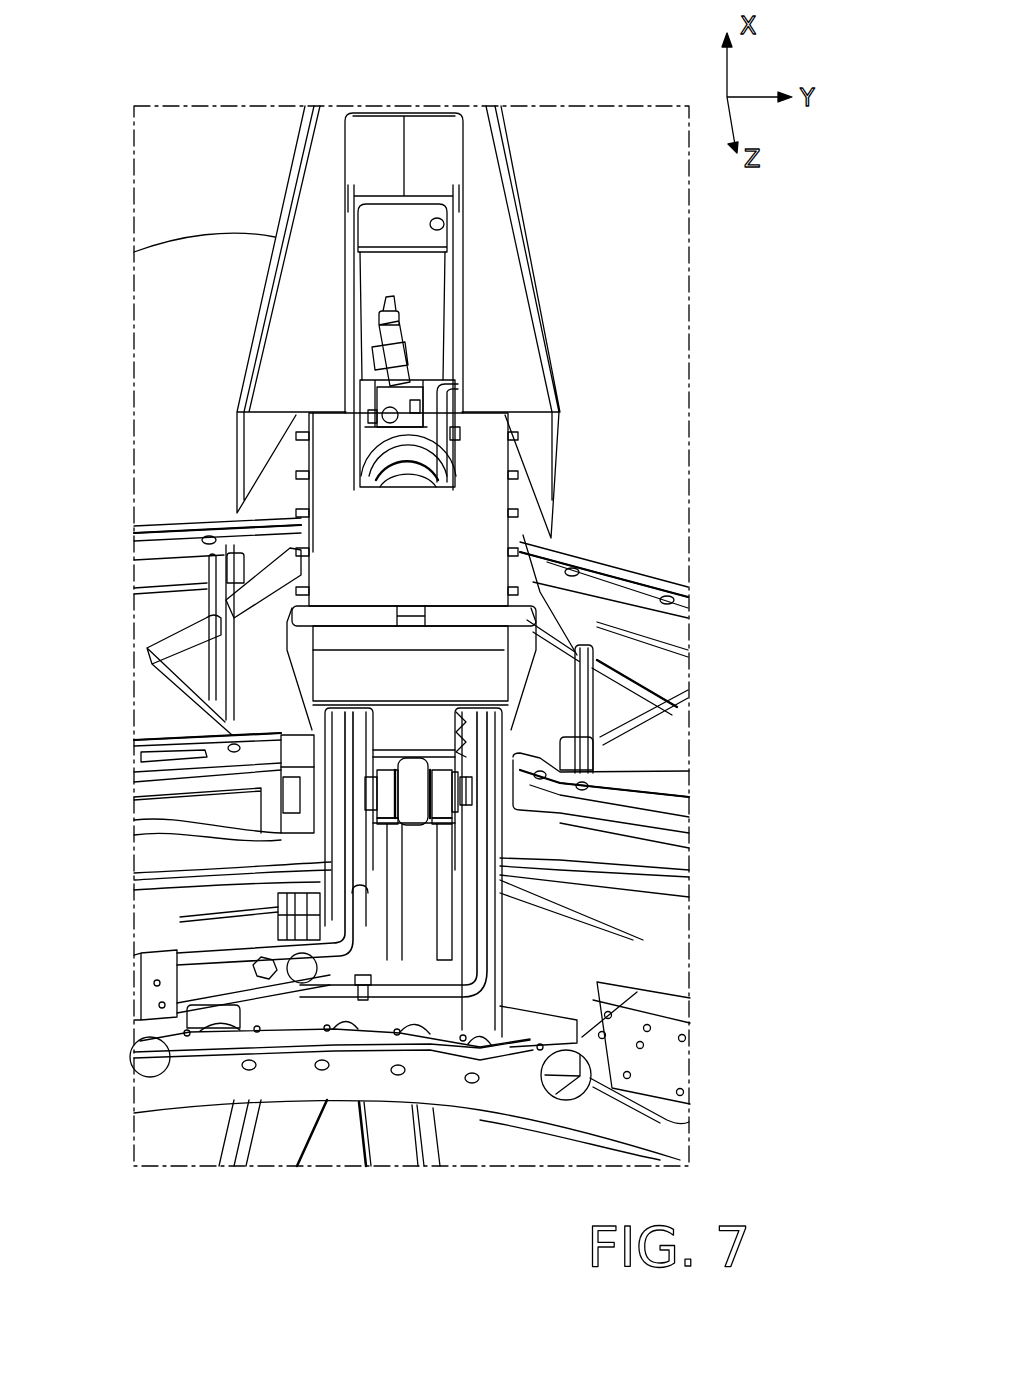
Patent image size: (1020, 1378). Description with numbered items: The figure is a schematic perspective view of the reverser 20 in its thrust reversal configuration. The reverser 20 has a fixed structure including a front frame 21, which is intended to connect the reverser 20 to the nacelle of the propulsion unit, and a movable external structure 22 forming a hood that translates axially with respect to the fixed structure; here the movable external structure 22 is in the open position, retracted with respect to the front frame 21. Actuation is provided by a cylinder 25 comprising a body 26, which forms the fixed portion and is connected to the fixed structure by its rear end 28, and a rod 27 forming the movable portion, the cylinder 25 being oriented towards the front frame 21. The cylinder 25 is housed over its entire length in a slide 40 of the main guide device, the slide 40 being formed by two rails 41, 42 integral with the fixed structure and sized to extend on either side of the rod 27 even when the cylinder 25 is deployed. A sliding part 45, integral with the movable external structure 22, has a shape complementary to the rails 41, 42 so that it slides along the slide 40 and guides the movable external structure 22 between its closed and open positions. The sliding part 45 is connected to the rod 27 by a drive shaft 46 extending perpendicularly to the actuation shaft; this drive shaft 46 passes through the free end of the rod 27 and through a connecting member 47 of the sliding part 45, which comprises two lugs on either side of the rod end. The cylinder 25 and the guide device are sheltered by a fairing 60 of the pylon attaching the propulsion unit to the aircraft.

The reverser 20 is at (133, 102).
The front frame 21 is at (502, 1102).
The movable external structure 22 is at (606, 331).
The cylinder 25 is at (746, 432).
The body 26 is at (408, 485).
The rod 27 is at (412, 770).
The rear end 28 is at (373, 452).
The slide 40 is at (416, 1222).
The rail 41 is at (345, 875).
The rail 42 is at (487, 913).
The sliding part 45 is at (345, 675).
The drive shaft 46 is at (466, 787).
The connecting member 47 is at (387, 815).
The fairing 60 is at (276, 338).